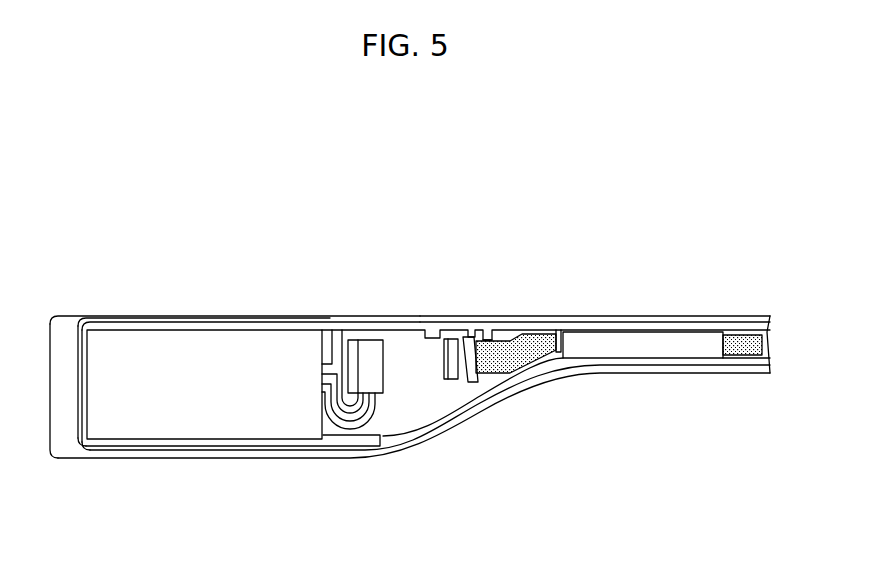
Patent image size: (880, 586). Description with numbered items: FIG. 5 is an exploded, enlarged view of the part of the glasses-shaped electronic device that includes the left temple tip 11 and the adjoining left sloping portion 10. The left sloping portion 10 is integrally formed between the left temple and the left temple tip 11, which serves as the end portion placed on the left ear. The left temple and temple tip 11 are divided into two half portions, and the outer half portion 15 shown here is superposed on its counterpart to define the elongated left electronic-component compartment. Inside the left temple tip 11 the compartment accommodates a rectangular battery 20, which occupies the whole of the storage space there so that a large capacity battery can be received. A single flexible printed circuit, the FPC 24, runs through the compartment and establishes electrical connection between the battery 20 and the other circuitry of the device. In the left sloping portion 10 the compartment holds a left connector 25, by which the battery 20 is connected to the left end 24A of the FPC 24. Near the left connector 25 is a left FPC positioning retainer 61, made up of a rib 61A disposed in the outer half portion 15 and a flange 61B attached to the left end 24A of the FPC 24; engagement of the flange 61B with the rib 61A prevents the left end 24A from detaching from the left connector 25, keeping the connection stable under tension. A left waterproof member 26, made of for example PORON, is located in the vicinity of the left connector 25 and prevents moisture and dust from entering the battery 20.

The left sloping portion 10 is at (405, 440).
The left temple tip 11 is at (120, 316).
The outer half portion 15 is at (660, 318).
The battery 20 is at (187, 425).
The flexible printed circuit 24 is at (742, 350).
The left end of the FPC 24A is at (488, 372).
The left connector 25 is at (403, 329).
The left waterproof member 26 is at (636, 345).
The left FPC positioning retainer 61 is at (489, 292).
The rib 61A is at (511, 292).
The flange 61B is at (472, 330).